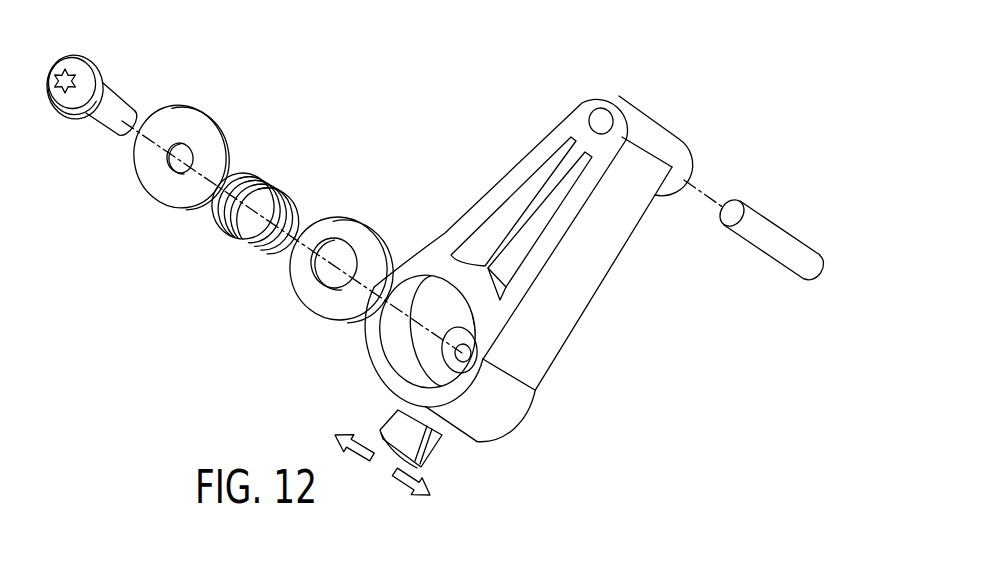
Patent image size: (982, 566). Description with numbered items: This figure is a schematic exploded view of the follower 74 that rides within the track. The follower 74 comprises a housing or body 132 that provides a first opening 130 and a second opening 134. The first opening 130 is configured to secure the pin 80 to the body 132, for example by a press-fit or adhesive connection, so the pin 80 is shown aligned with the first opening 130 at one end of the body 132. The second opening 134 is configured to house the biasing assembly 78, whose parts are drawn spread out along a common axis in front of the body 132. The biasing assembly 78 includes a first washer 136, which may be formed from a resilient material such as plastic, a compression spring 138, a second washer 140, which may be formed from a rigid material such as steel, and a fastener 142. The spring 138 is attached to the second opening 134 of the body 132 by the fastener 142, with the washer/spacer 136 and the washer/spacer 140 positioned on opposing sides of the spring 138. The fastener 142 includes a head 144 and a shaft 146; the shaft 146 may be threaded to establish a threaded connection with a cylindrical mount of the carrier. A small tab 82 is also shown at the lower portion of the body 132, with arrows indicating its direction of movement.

The follower 74 is at (366, 90).
The biasing assembly 78 is at (328, 365).
The pin 80 is at (780, 227).
The tab 82 is at (437, 453).
The first opening 130 is at (590, 118).
The body 132 is at (537, 157).
The second opening 134 is at (424, 292).
The first washer 136 is at (350, 222).
The compression spring 138 is at (282, 187).
The second washer 140 is at (218, 130).
The fastener 142 is at (124, 48).
The head 144 is at (105, 67).
The shaft 146 is at (118, 102).